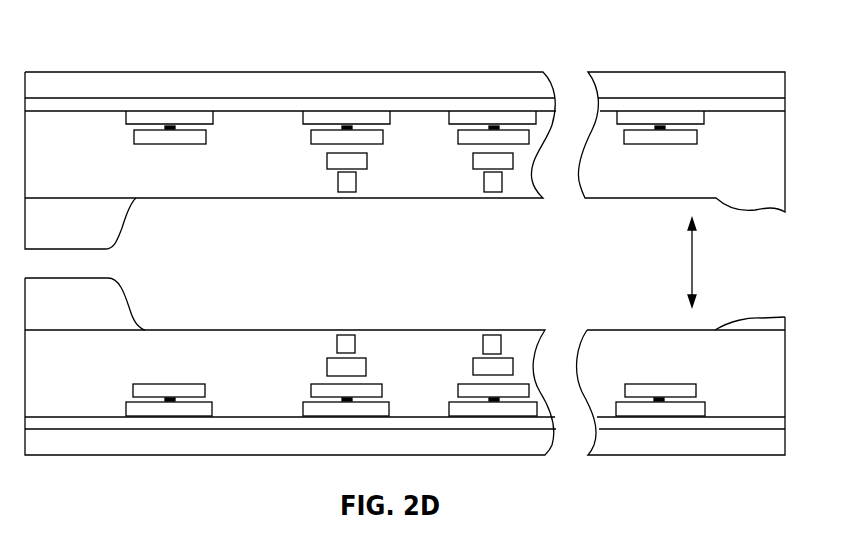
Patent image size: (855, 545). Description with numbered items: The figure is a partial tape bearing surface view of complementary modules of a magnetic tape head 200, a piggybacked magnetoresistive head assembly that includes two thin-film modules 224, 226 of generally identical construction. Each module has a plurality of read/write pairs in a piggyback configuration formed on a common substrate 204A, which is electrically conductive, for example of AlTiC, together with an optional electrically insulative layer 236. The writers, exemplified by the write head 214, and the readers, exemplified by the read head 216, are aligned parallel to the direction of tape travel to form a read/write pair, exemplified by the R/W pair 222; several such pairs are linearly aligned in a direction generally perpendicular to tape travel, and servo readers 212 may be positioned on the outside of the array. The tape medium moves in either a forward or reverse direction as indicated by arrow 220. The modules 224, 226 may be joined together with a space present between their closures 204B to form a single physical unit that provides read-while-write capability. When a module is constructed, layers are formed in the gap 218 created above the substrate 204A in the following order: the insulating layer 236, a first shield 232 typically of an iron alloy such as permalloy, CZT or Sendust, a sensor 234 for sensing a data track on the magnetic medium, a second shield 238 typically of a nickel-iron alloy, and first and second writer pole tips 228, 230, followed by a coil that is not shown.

The magnetic tape head 200 is at (338, 57).
The common substrate 204A is at (151, 95).
The closure 204B is at (113, 232).
The servo reader 212 is at (210, 371).
The write head 214 is at (339, 335).
The read head 216 is at (330, 385).
The gap 218 is at (213, 200).
The arrow 220 is at (692, 267).
The R/W pair 222 is at (352, 311).
The thin-film module 224 is at (713, 72).
The thin-film module 226 is at (698, 456).
The first writer pole tip 228 is at (327, 366).
The second writer pole tip 230 is at (337, 341).
The first shield 232 is at (303, 410).
The sensor 234 is at (300, 393).
The electrically insulative layer 236 is at (776, 408).
The second shield 238 is at (302, 392).